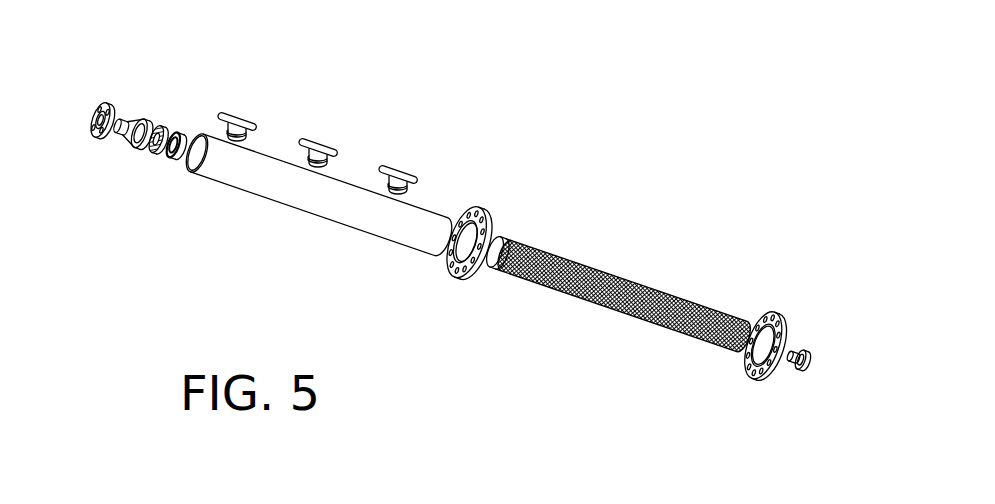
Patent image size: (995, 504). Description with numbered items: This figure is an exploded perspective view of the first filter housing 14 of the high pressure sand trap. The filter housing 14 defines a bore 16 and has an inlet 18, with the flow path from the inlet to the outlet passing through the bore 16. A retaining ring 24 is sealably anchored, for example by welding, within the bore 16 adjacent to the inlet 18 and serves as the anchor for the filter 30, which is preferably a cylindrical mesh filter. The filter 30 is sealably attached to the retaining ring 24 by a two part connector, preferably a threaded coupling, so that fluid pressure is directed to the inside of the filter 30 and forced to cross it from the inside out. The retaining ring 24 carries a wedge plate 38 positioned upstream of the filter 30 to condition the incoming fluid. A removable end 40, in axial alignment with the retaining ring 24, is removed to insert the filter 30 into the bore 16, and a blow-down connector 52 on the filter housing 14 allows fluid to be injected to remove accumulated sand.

The filter housing 14 is at (704, 96).
The bore 16 is at (305, 190).
The inlet 18 is at (94, 137).
The retaining ring 24 is at (182, 153).
The filter 30 is at (600, 308).
The wedge plate 38 is at (152, 152).
The removable end 40 is at (762, 351).
The blow-down connector 52 is at (805, 372).